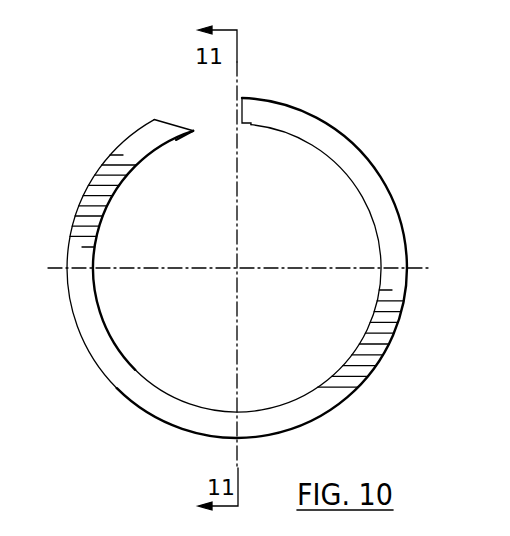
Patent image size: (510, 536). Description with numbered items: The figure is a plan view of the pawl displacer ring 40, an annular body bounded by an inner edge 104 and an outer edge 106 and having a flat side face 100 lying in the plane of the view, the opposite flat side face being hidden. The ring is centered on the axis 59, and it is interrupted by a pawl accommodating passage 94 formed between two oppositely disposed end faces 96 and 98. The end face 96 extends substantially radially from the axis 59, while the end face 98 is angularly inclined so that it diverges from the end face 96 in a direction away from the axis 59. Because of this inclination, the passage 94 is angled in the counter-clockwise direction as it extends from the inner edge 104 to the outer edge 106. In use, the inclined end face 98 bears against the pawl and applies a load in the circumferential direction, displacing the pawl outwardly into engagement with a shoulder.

The displacer ring 40 is at (332, 393).
The axis 59 is at (239, 270).
The pawl accommodating passage 94 is at (172, 116).
The end face 96 is at (246, 110).
The end face 98 is at (178, 134).
The flat side face 100 is at (226, 268).
The inner edge 104 is at (137, 370).
The outer edge 106 is at (123, 393).